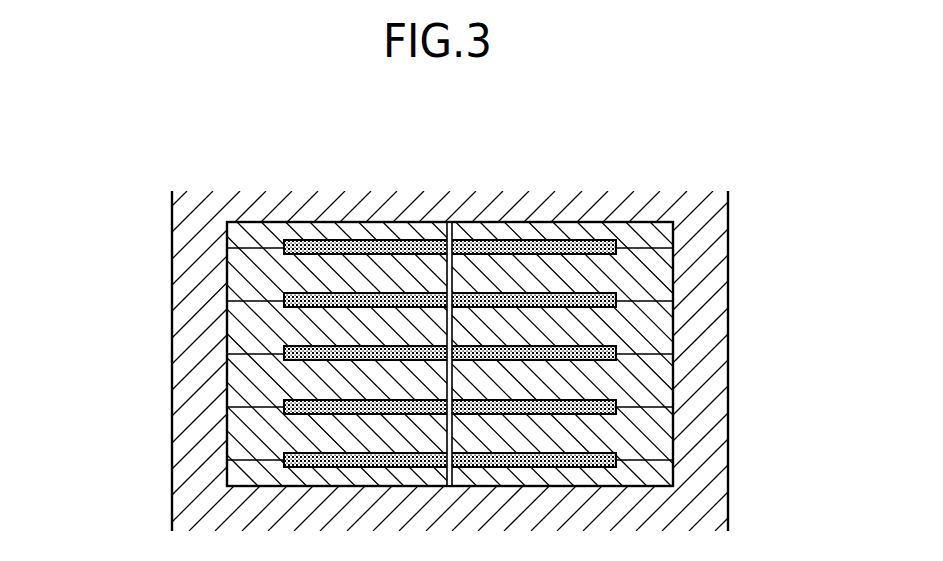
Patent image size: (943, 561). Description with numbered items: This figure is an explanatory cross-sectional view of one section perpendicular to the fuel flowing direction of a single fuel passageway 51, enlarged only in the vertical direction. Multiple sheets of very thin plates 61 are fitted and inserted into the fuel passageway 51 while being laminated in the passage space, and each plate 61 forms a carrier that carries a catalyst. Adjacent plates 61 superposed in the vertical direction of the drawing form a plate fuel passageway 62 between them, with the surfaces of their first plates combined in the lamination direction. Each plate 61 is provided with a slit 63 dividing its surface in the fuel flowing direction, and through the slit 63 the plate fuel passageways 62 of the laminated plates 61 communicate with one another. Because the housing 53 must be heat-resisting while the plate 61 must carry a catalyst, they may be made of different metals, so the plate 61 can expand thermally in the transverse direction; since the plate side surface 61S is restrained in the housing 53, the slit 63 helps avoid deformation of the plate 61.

The fuel passageway 51 is at (227, 378).
The housing 53 is at (195, 281).
The plate 61 is at (675, 428).
The plate side surface 61S is at (689, 276).
The plate fuel passageway 62 is at (330, 245).
The slit 63 is at (448, 221).